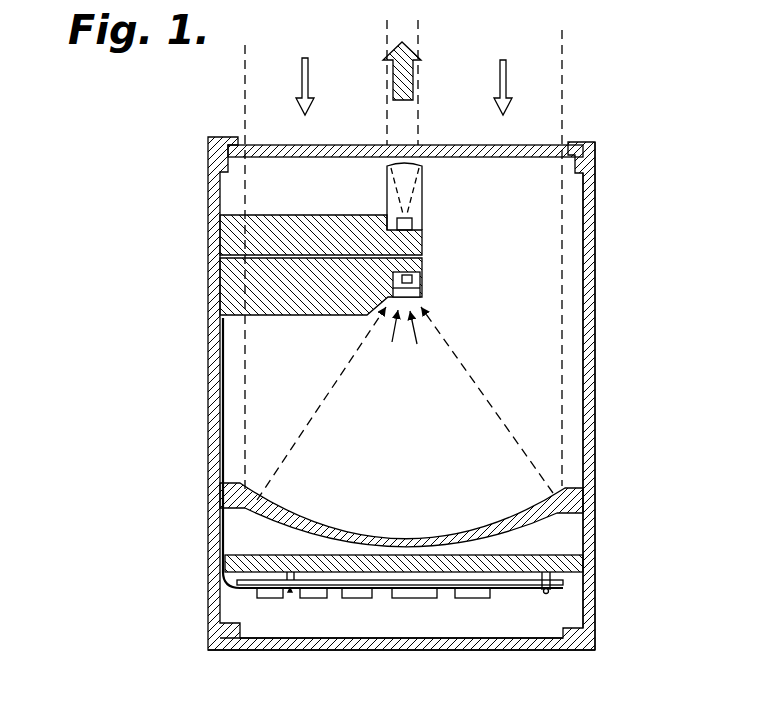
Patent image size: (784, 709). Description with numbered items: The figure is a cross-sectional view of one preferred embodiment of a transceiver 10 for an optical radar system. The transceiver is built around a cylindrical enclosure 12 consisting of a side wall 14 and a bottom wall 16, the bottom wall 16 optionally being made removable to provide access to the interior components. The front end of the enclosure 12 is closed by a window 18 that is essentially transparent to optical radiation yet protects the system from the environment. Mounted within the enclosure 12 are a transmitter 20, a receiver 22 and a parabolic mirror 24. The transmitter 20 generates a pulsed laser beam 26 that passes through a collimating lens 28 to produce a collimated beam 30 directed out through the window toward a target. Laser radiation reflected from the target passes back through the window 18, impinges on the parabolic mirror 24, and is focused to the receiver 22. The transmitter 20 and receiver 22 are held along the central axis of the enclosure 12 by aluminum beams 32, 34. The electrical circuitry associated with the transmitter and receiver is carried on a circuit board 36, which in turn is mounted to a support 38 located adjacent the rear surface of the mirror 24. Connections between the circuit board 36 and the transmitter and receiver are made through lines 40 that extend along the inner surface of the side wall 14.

The transceiver 10 is at (626, 184).
The cylindrical enclosure 12 is at (595, 295).
The side wall 14 is at (583, 437).
The bottom wall 16 is at (555, 650).
The window 18 is at (506, 147).
The transmitter 20 is at (434, 213).
The receiver 22 is at (434, 285).
The parabolic mirror 24 is at (403, 532).
The pulsed laser beam 26 is at (403, 193).
The collimating lens 28 is at (388, 173).
The collimated beam 30 is at (415, 42).
The aluminum beam 32 is at (292, 228).
The aluminum beam 34 is at (297, 315).
The circuit board 36 is at (517, 586).
The support 38 is at (583, 556).
The lines 40 is at (225, 428).